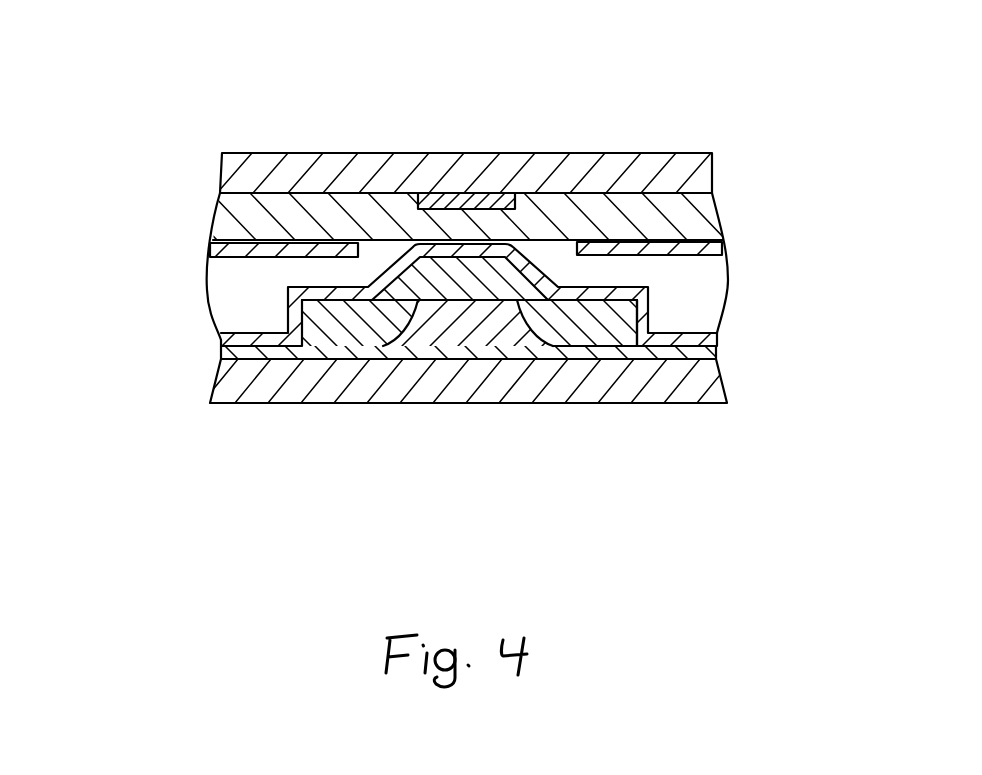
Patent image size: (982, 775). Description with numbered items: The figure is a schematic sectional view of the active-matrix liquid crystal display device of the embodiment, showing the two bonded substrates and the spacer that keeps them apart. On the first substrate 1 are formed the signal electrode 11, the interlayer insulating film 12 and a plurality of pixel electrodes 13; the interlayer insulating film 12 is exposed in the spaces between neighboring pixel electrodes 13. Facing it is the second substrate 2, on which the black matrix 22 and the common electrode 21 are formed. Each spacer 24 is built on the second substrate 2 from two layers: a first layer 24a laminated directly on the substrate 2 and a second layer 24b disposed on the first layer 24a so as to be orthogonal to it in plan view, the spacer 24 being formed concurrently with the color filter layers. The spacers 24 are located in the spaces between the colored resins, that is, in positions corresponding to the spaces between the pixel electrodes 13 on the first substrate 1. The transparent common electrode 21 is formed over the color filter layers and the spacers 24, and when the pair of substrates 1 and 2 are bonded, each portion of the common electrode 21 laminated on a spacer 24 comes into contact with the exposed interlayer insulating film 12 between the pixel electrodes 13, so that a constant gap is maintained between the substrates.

The first substrate 1 is at (298, 163).
The signal electrode 11 is at (477, 200).
The interlayer insulating film 12 is at (600, 202).
The pixel electrodes 13 is at (212, 248).
The second substrate 2 is at (447, 405).
The common electrode 21 is at (718, 326).
The black matrix 22 is at (718, 349).
The spacer 24 is at (313, 360).
The first layer 24a is at (428, 318).
The second layer 24b is at (602, 327).